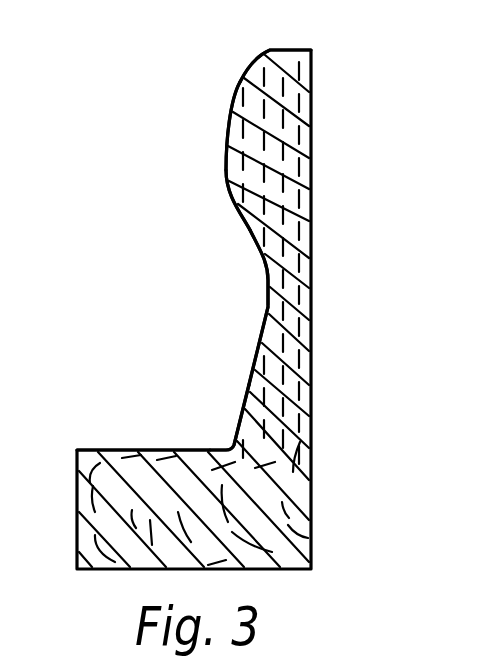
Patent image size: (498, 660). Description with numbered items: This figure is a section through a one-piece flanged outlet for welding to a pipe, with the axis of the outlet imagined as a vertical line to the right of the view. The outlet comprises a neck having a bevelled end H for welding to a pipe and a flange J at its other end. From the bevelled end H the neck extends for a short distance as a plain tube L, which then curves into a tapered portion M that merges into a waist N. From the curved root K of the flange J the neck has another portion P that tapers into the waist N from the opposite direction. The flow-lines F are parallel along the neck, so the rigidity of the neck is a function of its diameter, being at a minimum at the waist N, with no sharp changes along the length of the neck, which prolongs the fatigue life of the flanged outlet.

The flow-lines F is at (312, 292).
The bevelled end H is at (257, 63).
The plain tube L is at (228, 136).
The tapered portion M is at (248, 228).
The waist N is at (268, 270).
The portion P is at (255, 356).
The curved root K is at (233, 445).
The flange J is at (122, 450).